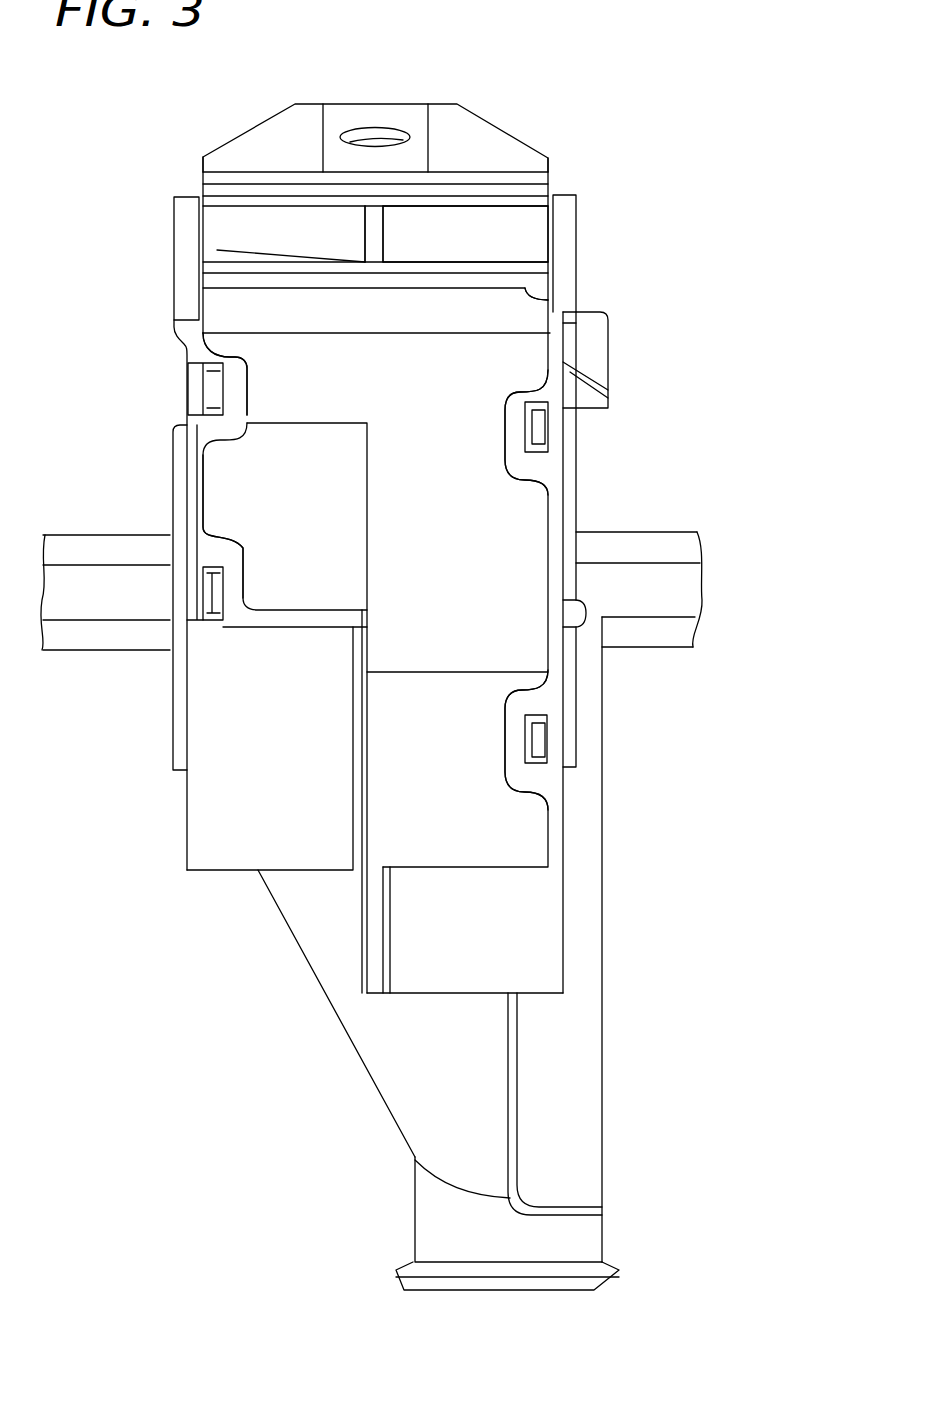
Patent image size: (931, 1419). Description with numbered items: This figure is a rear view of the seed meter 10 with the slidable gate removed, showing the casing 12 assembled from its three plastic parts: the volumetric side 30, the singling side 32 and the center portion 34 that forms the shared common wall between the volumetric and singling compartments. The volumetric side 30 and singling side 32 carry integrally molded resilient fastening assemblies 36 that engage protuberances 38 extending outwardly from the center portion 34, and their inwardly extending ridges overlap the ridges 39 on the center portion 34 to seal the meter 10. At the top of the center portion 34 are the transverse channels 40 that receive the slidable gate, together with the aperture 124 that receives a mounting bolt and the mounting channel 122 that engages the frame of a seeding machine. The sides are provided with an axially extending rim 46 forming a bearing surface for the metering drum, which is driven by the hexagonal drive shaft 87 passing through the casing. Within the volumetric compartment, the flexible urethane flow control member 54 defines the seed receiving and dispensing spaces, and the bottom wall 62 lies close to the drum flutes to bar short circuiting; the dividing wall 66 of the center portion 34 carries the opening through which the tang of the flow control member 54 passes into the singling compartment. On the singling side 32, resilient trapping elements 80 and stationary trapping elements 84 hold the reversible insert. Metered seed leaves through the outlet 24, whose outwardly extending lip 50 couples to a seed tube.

The seed meter 10 is at (637, 175).
The casing 12 is at (604, 917).
The outlet 24 is at (587, 1240).
The volumetric side 30 is at (173, 288).
The singling side 32 is at (578, 259).
The center portion 34 is at (446, 400).
The resilient fastening assemblies 36 is at (237, 382).
The protuberances 38 is at (212, 388).
The ridges 39 is at (387, 952).
The transverse channels 40 is at (522, 190).
The rim 46 is at (177, 465).
The lip 50 is at (620, 1268).
The flow control member 54 is at (222, 256).
The bottom wall 62 is at (217, 847).
The dividing wall 66 is at (378, 228).
The resilient trapping elements 80 is at (597, 350).
The stationary trapping elements 84 is at (586, 610).
The hexagonal drive shaft 87 is at (668, 547).
The mounting channel 122 is at (532, 298).
The aperture 124 is at (378, 128).